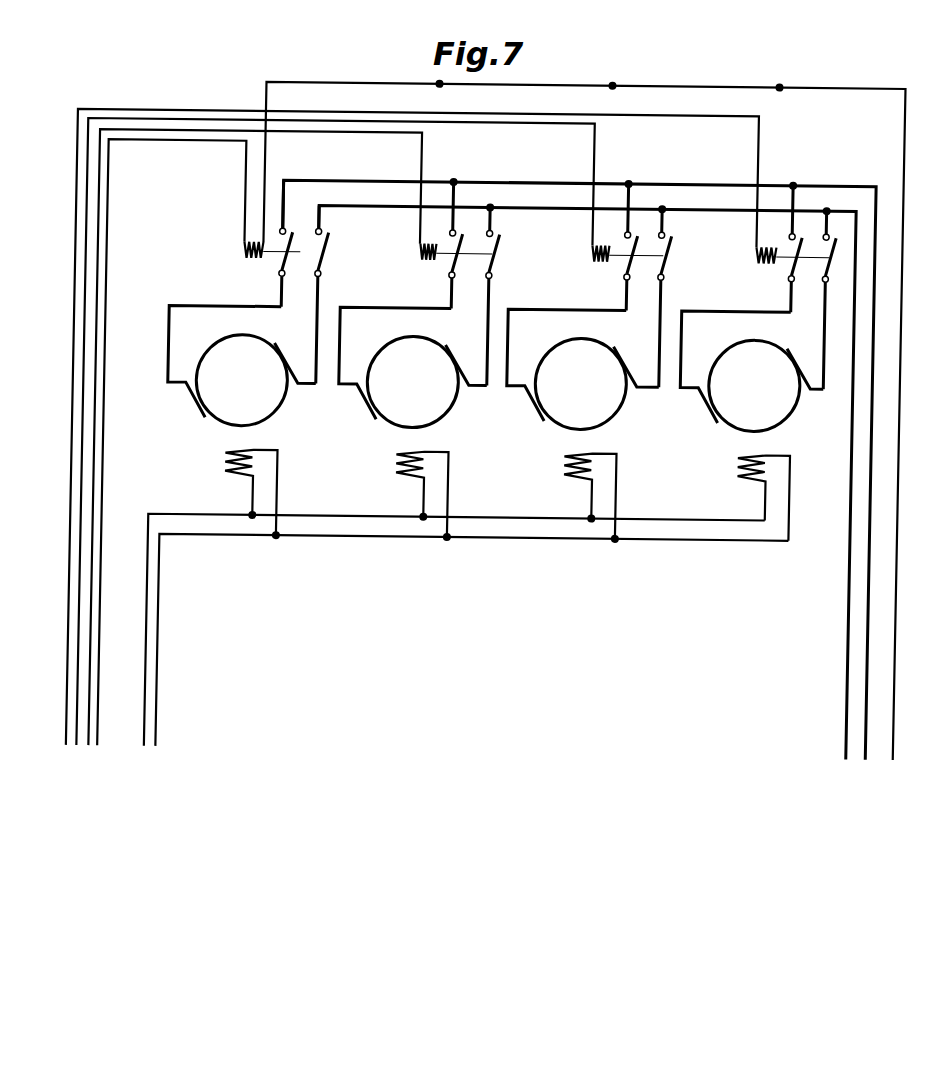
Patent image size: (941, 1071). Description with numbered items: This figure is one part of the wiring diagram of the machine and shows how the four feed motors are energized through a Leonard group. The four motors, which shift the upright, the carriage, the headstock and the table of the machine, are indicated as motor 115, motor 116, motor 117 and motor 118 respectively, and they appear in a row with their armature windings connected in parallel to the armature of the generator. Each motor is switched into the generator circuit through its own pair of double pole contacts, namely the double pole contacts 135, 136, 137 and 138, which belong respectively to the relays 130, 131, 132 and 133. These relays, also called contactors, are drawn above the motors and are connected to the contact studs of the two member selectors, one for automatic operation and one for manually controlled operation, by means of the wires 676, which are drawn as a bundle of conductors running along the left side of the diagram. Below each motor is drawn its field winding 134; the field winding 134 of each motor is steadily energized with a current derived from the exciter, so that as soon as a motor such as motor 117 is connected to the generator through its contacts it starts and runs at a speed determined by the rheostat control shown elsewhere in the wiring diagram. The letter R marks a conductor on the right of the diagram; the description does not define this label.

The feed motor for shifting the upright 115 is at (751, 371).
The feed motor for shifting the carriage 116 is at (583, 369).
The feed motor for shifting the headstock 117 is at (413, 367).
The feed motor for shifting the table 118 is at (242, 365).
The relay 130 is at (762, 249).
The relay 131 is at (597, 244).
The relay 132 is at (424, 242).
The relay 133 is at (250, 246).
The field winding 134 is at (235, 466).
The double pole contacts 135 is at (815, 250).
The double pole contacts 136 is at (650, 252).
The double pole contacts 137 is at (477, 252).
The double pole contacts 138 is at (305, 249).
The wires 676 is at (83, 267).
The supply conductor R is at (908, 258).